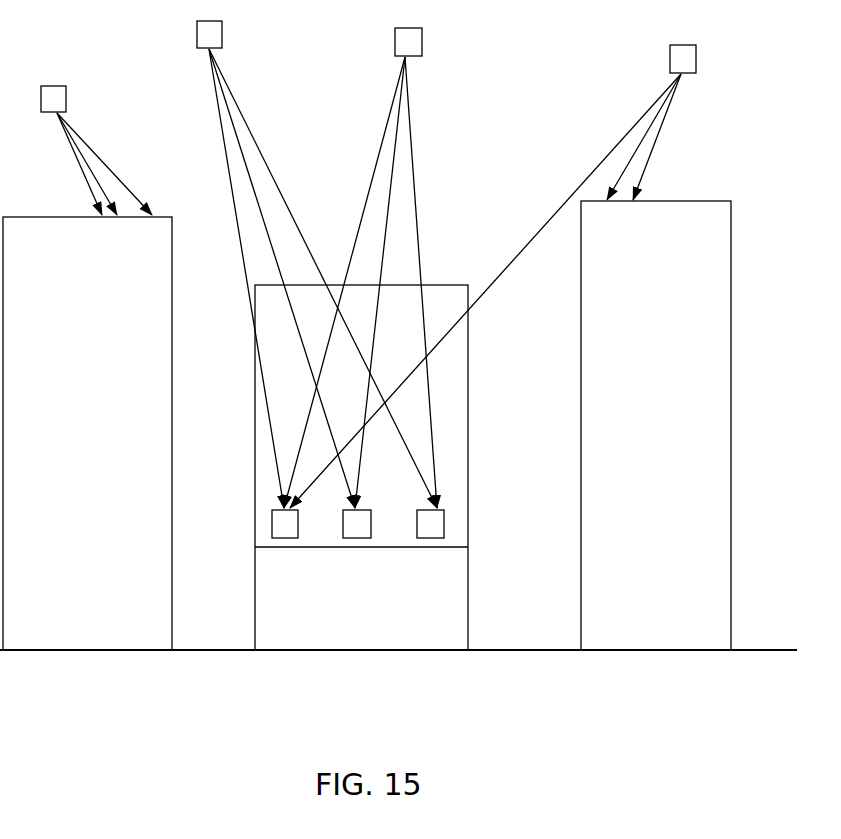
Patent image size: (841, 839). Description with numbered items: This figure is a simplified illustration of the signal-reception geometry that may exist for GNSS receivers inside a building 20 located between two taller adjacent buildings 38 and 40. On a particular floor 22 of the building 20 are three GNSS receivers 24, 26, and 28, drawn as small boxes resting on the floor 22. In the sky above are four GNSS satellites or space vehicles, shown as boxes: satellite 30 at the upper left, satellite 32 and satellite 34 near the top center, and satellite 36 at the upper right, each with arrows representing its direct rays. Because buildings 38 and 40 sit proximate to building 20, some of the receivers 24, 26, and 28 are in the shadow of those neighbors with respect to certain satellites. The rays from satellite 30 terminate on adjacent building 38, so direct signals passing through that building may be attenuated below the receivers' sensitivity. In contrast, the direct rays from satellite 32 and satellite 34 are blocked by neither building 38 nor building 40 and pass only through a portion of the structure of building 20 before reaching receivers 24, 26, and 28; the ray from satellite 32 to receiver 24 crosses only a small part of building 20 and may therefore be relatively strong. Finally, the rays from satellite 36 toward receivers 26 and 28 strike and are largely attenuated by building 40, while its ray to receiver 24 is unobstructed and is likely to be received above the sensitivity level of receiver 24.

The building 20 is at (344, 627).
The floor 22 is at (312, 548).
The GNSS receiver 24 is at (284, 539).
The GNSS receiver 26 is at (357, 539).
The GNSS receiver 28 is at (434, 539).
The satellite 30 is at (57, 90).
The satellite 32 is at (212, 33).
The satellite 34 is at (405, 38).
The satellite 36 is at (688, 54).
The building 38 is at (60, 621).
The building 40 is at (663, 620).